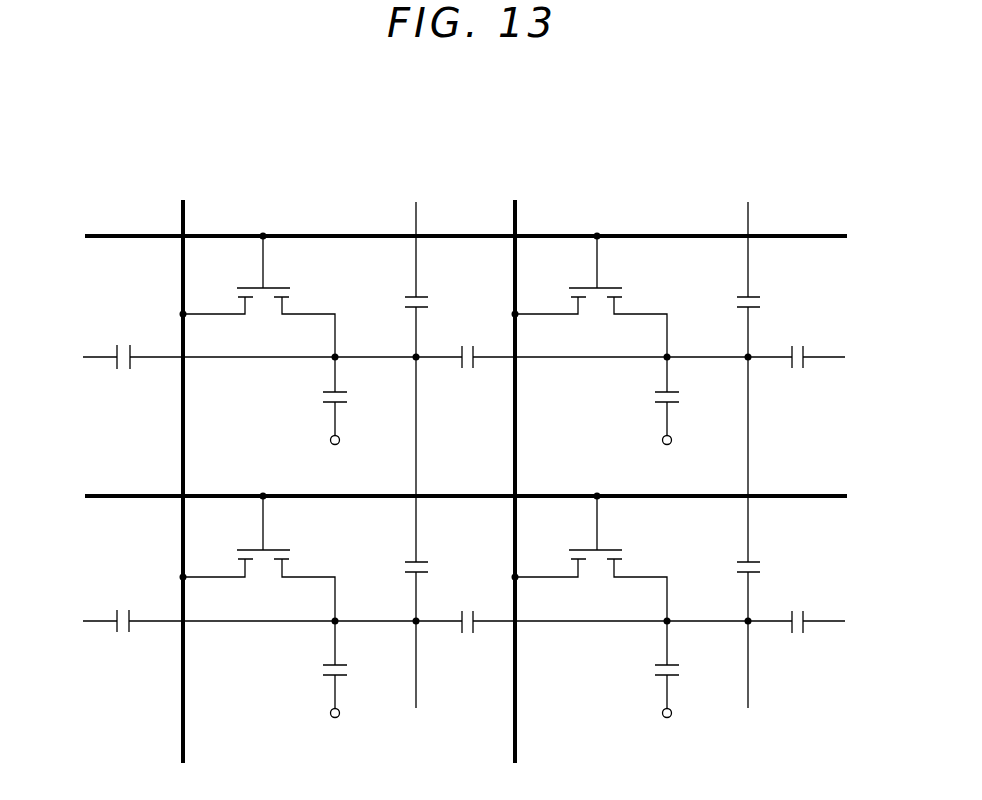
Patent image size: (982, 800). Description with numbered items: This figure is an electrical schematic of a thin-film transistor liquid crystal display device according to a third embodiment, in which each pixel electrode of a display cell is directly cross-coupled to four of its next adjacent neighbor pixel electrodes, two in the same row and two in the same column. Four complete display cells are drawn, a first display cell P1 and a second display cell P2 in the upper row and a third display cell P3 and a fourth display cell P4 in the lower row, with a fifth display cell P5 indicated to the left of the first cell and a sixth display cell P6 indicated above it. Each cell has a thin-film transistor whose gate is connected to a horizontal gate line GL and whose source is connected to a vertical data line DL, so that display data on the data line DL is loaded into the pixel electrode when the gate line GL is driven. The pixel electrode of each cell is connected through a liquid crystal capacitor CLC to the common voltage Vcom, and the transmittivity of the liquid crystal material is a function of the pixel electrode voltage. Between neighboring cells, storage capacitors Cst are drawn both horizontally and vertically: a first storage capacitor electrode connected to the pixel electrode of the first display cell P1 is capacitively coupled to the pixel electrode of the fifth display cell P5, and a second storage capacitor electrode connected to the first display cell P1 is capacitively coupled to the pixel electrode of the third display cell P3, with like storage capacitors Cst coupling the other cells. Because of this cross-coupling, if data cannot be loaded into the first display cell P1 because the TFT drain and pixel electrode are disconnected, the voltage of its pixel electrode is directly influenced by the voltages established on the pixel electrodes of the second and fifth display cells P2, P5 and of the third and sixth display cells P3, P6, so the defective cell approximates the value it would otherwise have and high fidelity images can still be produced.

The gate line GL is at (823, 237).
The data line DL is at (190, 212).
The storage capacitor Cst is at (458, 477).
The liquid crystal capacitor CLC is at (474, 532).
The common voltage Vcom is at (502, 591).
The first display cell P1 is at (250, 447).
The second display cell P2 is at (582, 448).
The third display cell P3 is at (250, 710).
The fourth display cell P4 is at (582, 712).
The fifth display cell P5 is at (80, 447).
The sixth display cell P6 is at (331, 177).